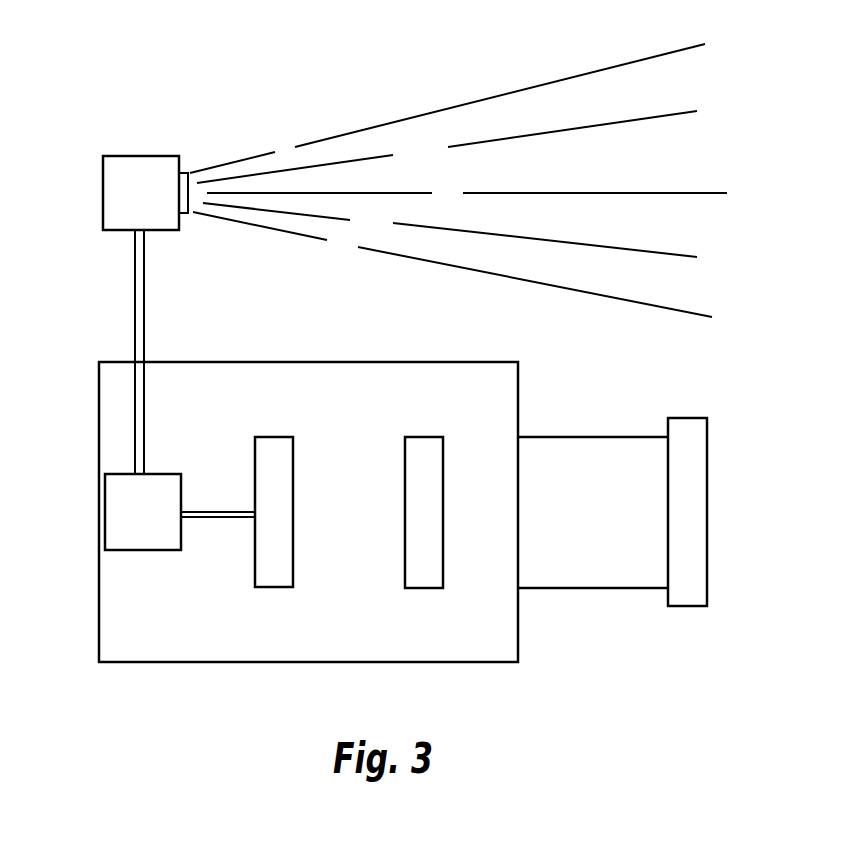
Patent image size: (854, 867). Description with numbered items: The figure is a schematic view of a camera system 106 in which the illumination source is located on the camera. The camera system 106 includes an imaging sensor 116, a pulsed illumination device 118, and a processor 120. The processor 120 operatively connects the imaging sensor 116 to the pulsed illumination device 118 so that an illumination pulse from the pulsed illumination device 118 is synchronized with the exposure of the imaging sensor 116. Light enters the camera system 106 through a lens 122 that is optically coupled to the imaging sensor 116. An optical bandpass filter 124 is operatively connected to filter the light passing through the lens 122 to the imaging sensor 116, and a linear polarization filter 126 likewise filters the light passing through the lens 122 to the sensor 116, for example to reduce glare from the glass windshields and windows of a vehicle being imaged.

The camera system 106 is at (70, 404).
The imaging sensor 116 is at (277, 437).
The pulsed illumination device 118 is at (103, 193).
The processor 120 is at (167, 528).
The lens 122 is at (580, 437).
The optical bandpass filter 124 is at (420, 437).
The linear polarization filter 126 is at (690, 418).